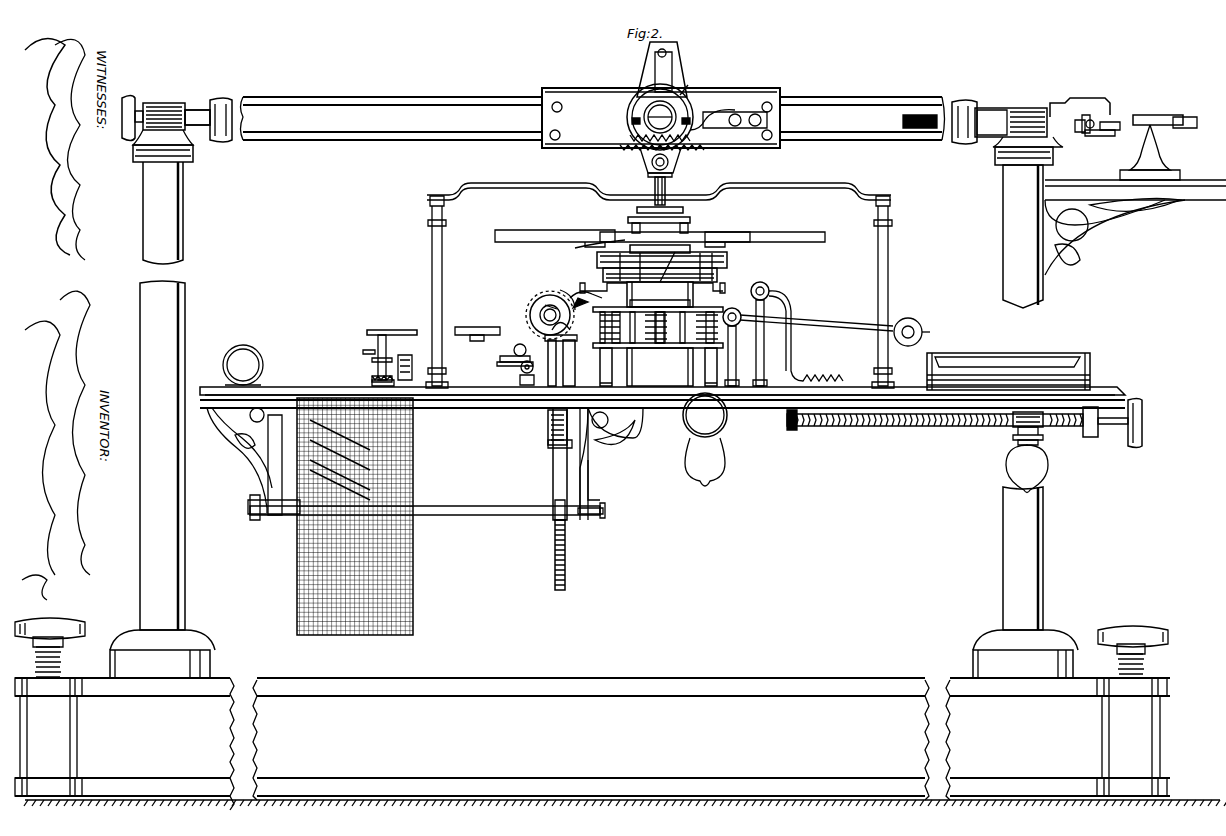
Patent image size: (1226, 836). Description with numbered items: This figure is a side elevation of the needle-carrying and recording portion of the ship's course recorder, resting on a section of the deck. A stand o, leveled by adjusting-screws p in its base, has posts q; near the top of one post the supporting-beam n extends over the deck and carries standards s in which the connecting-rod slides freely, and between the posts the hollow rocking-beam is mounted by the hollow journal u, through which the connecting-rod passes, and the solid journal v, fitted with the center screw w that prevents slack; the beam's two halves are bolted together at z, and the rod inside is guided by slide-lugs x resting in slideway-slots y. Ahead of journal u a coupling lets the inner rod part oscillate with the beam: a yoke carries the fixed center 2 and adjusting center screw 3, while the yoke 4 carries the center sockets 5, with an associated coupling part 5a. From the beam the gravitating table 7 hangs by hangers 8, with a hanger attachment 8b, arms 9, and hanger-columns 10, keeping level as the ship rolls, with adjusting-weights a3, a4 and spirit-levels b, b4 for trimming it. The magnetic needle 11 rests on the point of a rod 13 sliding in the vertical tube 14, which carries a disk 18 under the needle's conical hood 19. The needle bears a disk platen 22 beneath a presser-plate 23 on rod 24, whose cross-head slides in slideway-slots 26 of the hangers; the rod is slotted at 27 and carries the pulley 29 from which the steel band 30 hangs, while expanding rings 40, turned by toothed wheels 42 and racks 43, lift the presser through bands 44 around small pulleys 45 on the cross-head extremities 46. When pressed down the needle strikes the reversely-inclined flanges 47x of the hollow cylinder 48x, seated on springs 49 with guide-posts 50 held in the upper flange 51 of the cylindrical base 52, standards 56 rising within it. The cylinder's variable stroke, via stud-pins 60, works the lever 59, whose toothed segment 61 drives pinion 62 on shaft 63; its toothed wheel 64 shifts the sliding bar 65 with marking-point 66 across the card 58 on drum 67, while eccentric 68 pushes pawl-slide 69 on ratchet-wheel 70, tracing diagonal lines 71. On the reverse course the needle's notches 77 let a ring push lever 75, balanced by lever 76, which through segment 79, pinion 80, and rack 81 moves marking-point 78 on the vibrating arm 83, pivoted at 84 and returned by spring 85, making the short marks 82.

The fixed center 2 is at (1103, 117).
The adjusting center screw 3 is at (1080, 135).
The yoke 4 is at (1075, 108).
The center sockets 5 is at (1094, 140).
The clamp pin 5a is at (1098, 108).
The gravitating needle-carrying table 7 is at (1110, 135).
The hangers 8 is at (648, 166).
The curved spring tube 8b is at (828, 372).
The arms 9 is at (534, 194).
The hanger-columns 10 is at (443, 254).
The magnetic needle 11 is at (780, 234).
The rod 13 is at (689, 248).
The vertical tube 14 is at (660, 279).
The disk 18 is at (620, 245).
The conical pendent hood 19 is at (586, 245).
The disk platen 22 is at (689, 222).
The presser-plate 23 is at (683, 210).
The rod 24 is at (666, 53).
The slideway-slots 26 is at (654, 200).
The slot 27 is at (662, 69).
The pulley 29 is at (648, 42).
The thin steel band 30 is at (684, 92).
The expanding and contracting rings 40 is at (634, 118).
The toothed wheels 42 is at (632, 126).
The racks 43 is at (688, 140).
The metallic bands 44 is at (644, 156).
The small pulleys 45 is at (656, 178).
The projecting extremities 46 is at (674, 166).
The semicircular reversely-inclined flanges 47x is at (727, 259).
The hollow cylinder 48x is at (681, 293).
The springs 49 is at (658, 333).
The guide-posts 50 is at (729, 304).
The upper flange 51 is at (676, 336).
The hollow cylindrical base 52 is at (660, 367).
The standards 56 is at (658, 367).
The card 58 is at (411, 560).
The lever 59 is at (739, 343).
The stud-pins 60 is at (666, 336).
The toothed segment 61 is at (580, 290).
The pinion 62 is at (512, 310).
The shaft 63 is at (538, 324).
The toothed wheel 64 is at (560, 298).
The sliding bar 65 is at (477, 346).
The marking-point 66 is at (373, 354).
The drum 67 is at (403, 489).
The eccentric 68 is at (542, 304).
The pawl-slide 69 is at (558, 410).
The ratchet-wheel 70 is at (572, 555).
The diagonal lines 71 is at (418, 501).
The lever 75 is at (616, 276).
The balancing-lever 76 is at (714, 280).
The notches 77 is at (542, 232).
The marking-point 78 is at (566, 427).
The segment 79 is at (535, 388).
The pinion 80 is at (528, 360).
The rack 81 is at (816, 396).
The short marks 82 is at (253, 463).
The vibrating arm 83 is at (394, 358).
The pivot 84 is at (414, 367).
The spring 85 is at (370, 379).
The ball weight a3 is at (1010, 464).
The ball weight a4 is at (720, 464).
The ring b is at (252, 358).
The trough b4 is at (1008, 359).
The supporting-beam n is at (1135, 195).
The stand o is at (820, 682).
The adjusting-screws p is at (80, 640).
The posts q is at (185, 216).
The standards s is at (1168, 148).
The hollow journal u is at (1022, 129).
The solid journal v is at (189, 103).
The center screw w is at (130, 96).
The slide-lugs x is at (909, 112).
The slideway-slots y is at (922, 130).
The bolted joint z is at (593, 114).